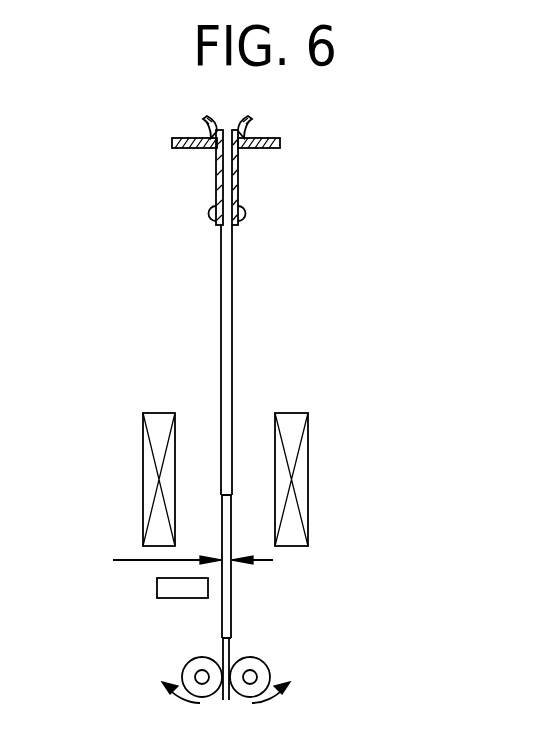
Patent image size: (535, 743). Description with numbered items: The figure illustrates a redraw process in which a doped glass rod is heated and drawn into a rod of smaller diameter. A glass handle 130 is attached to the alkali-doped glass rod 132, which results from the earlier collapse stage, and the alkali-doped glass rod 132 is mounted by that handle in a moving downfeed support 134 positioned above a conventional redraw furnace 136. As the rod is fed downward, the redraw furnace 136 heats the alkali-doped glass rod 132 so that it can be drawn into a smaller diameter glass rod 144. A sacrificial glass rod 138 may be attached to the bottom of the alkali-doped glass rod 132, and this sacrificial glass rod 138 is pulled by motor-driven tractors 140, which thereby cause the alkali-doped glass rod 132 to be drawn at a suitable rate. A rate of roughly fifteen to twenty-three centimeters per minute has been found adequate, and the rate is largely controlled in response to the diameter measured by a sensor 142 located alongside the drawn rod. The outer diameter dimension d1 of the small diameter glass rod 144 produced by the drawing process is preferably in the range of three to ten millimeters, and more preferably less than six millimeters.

The glass handle 130 is at (239, 190).
The alkali-doped glass rod 132 is at (232, 273).
The moving downfeed support 134 is at (278, 143).
The redraw furnace 136 is at (308, 452).
The sacrificial glass rod 138 is at (231, 647).
The motor-driven tractors 140 is at (183, 672).
The sensor 142 is at (157, 590).
The small diameter glass rod 144 is at (231, 587).
The outer diameter dimension d1 is at (113, 560).